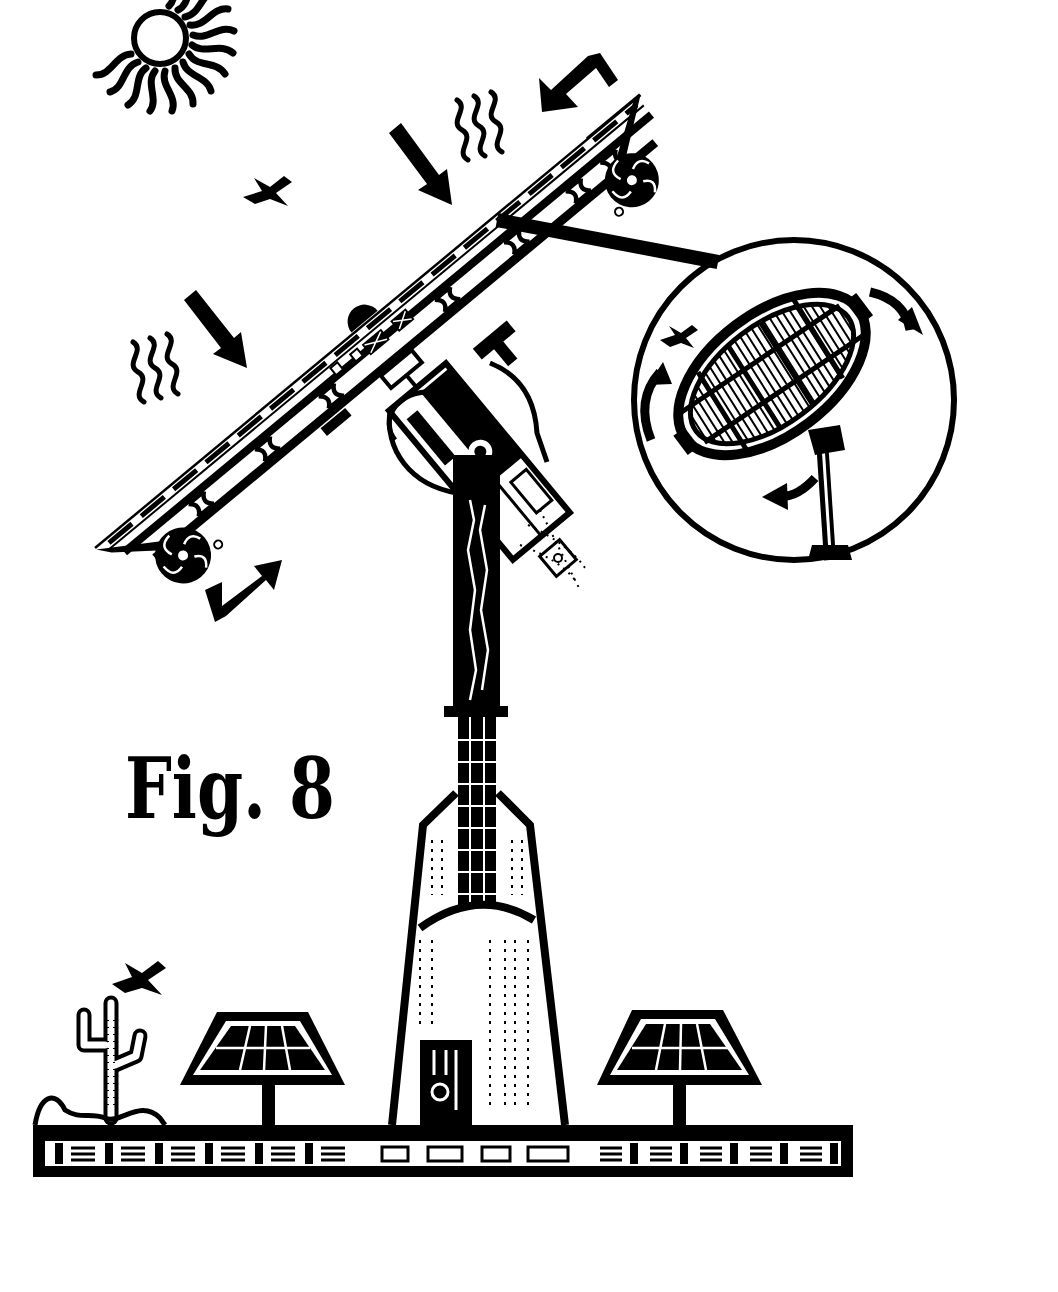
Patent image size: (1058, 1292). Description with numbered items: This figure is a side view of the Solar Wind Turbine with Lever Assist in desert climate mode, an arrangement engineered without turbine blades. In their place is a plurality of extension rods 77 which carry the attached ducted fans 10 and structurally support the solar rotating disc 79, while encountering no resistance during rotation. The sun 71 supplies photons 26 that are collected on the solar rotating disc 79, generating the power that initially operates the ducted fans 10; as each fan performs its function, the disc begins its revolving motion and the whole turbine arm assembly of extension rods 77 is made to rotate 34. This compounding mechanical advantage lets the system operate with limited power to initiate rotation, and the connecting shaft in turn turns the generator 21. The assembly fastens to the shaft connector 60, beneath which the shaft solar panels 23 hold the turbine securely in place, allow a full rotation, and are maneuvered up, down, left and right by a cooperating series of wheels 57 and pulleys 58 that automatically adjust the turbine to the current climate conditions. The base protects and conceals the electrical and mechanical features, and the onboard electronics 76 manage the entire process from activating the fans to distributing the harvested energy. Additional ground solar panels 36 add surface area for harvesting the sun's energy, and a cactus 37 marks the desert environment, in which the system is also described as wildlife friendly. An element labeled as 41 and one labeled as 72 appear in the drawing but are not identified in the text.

The ducted fans 10 is at (652, 180).
The generator 21 is at (540, 472).
The shaft solar panels 23 is at (495, 941).
The photons 26 is at (473, 93).
The rotate 34 is at (263, 592).
The ground solar panels 36 is at (323, 1028).
The cactus 37 is at (106, 1012).
The bird 41 is at (258, 208).
The wheels 57 is at (522, 889).
The pulleys 58 is at (522, 936).
The shaft connector 60 is at (510, 712).
The sun 71 is at (160, 118).
The panel 72 is at (486, 222).
The onboard electronics 76 is at (566, 578).
The extension rods 77 is at (500, 290).
The solar rotating disc 79 is at (638, 92).